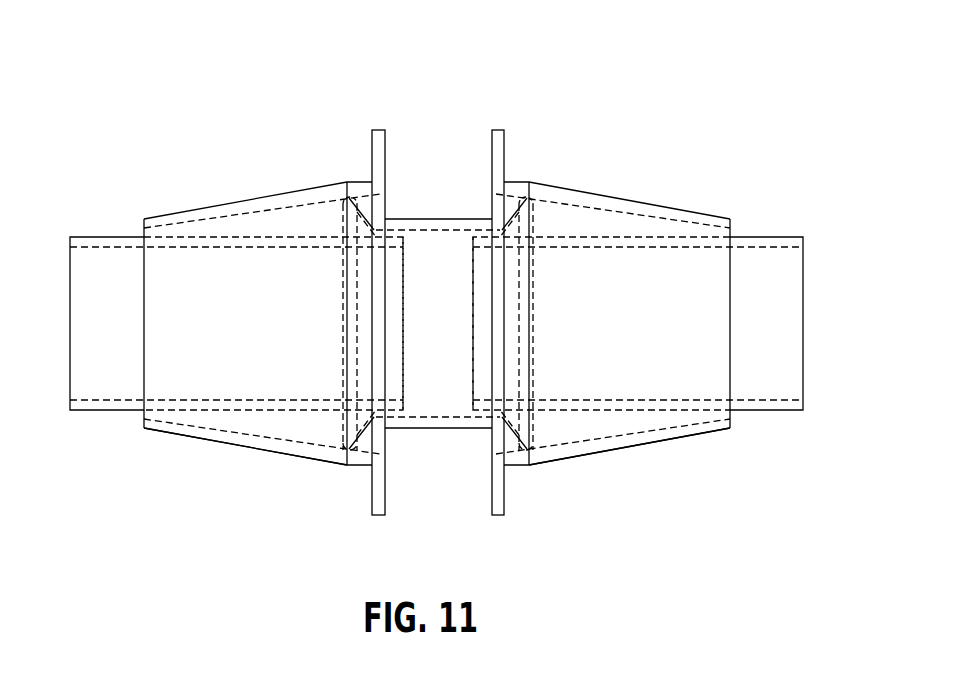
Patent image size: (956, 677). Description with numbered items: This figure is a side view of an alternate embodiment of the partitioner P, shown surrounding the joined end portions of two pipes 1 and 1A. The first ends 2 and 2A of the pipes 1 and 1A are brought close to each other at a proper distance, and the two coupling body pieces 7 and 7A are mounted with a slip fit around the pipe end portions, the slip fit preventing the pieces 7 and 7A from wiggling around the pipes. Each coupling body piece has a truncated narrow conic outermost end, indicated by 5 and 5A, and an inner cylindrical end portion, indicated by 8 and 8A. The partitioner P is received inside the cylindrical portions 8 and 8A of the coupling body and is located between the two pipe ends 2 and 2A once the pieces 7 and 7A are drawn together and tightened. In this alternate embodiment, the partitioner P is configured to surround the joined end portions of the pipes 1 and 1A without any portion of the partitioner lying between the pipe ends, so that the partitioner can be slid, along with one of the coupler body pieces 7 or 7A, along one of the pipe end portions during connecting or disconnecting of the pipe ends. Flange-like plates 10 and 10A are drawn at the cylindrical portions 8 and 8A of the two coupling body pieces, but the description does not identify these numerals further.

The pipe 1 is at (117, 235).
The pipe 1A is at (747, 236).
The first end of pipe 2 is at (403, 248).
The first end of pipe 2A is at (473, 402).
The truncated narrow conic outermost end 5 is at (143, 430).
The truncated narrow conic outermost end 5A is at (730, 428).
The coupling body piece 7 is at (242, 202).
The coupling body piece 7A is at (627, 200).
The inner cylindrical end portion 8 is at (358, 183).
The inner cylindrical end portion 8A is at (515, 182).
The first plate 10 is at (375, 130).
The second plate 10A is at (504, 130).
The partitioner P is at (415, 218).